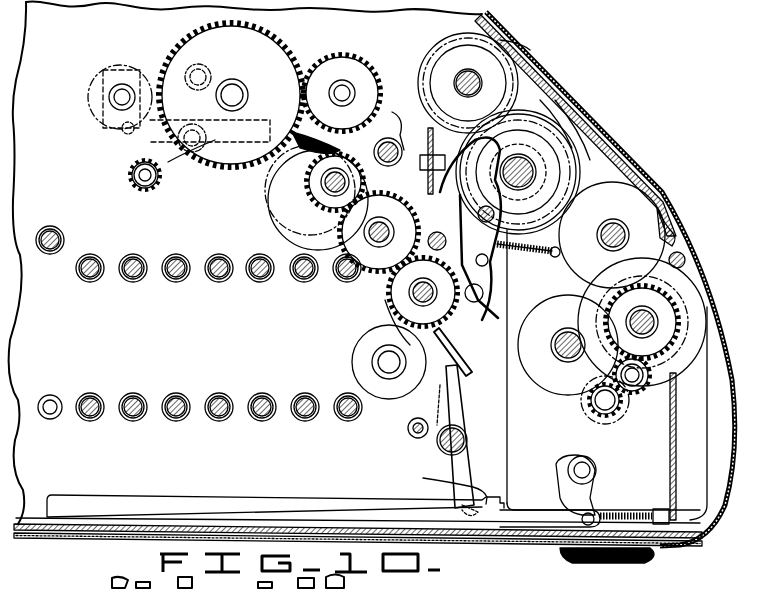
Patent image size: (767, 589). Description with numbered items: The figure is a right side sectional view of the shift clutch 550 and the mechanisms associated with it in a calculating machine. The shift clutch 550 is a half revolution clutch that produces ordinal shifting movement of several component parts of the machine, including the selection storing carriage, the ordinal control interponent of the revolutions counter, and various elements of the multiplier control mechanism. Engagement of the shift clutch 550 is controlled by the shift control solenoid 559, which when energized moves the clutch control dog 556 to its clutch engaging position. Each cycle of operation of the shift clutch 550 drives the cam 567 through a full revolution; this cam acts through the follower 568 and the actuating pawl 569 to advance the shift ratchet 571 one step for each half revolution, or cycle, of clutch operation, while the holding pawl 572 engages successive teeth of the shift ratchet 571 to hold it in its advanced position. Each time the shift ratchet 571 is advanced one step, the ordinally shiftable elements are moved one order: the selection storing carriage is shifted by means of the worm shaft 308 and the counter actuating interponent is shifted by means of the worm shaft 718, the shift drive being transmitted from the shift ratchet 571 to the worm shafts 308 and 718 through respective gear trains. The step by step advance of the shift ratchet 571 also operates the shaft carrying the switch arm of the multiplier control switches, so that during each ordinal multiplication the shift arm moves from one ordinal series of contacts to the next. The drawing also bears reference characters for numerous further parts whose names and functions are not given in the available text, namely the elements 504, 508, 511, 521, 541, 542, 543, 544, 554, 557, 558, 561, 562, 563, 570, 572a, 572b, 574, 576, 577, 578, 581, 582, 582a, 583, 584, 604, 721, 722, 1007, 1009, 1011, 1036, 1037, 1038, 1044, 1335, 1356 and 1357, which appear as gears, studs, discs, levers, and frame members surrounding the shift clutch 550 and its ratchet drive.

The worm shaft 308 is at (378, 364).
The gear 504 is at (660, 318).
The frame member 508 is at (658, 212).
The ring 511 is at (578, 160).
The ring 521 is at (572, 178).
The arm 541 is at (552, 92).
The frame edge 542 is at (518, 36).
The shaft 543 is at (473, 66).
The hub 544 is at (469, 92).
The shift clutch 550 is at (580, 144).
The arm 554 is at (574, 116).
The clutch control dog 556 is at (540, 258).
The stud 557 is at (476, 302).
The stud 558 is at (399, 152).
The shift control solenoid 559 is at (325, 183).
The disc 561 is at (422, 68).
The disc 562 is at (428, 50).
The shaft 563 is at (527, 151).
The cam 567 is at (575, 210).
The follower 568 is at (487, 257).
The actuating pawl 569 is at (450, 232).
The gear 570 is at (372, 234).
The shift ratchet 571 is at (306, 283).
The holding pawl 572 is at (382, 282).
The lever arm 572a is at (466, 357).
The lever 572b is at (491, 229).
The stud 574 is at (262, 283).
The gear 576 is at (332, 187).
The link 577 is at (386, 308).
The disc 578 is at (352, 352).
The slide bar 581 is at (428, 170).
The plate 582 is at (290, 210).
The plate portion 582a is at (300, 232).
The arm 583 is at (236, 180).
The gear 584 is at (328, 132).
The disc 604 is at (564, 356).
The worm shaft 718 is at (342, 93).
The pawl 721 is at (396, 112).
The gear 722 is at (322, 72).
The plate 1007 is at (296, 506).
The bracket 1009 is at (600, 478).
The spring 1011 is at (632, 514).
The link 1036 is at (432, 480).
The lever 1037 is at (456, 430).
The pivot stud 1038 is at (440, 443).
The stud 1044 is at (432, 415).
The shaft 1335 is at (114, 97).
The disc 1356 is at (84, 112).
The pinion 1357 is at (150, 190).